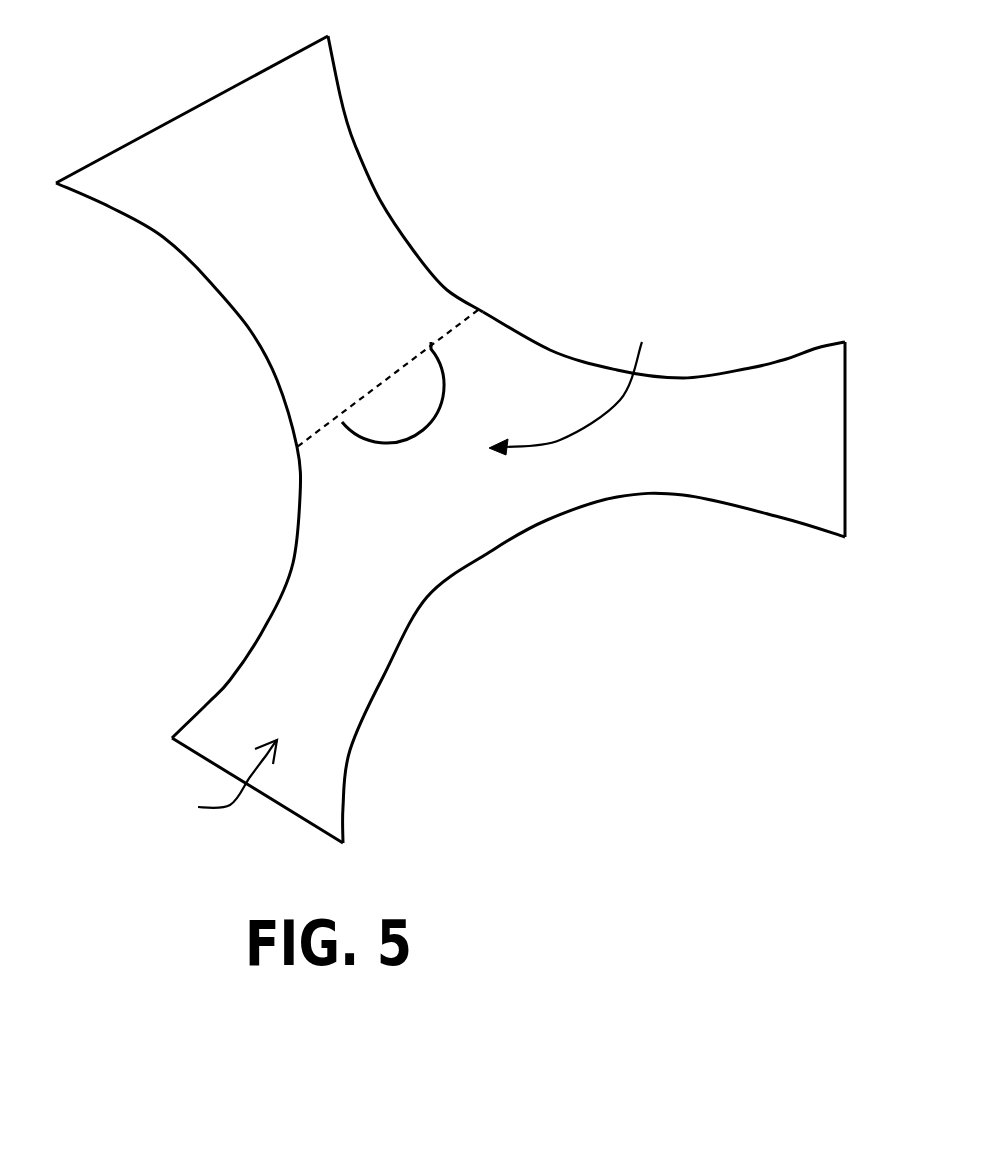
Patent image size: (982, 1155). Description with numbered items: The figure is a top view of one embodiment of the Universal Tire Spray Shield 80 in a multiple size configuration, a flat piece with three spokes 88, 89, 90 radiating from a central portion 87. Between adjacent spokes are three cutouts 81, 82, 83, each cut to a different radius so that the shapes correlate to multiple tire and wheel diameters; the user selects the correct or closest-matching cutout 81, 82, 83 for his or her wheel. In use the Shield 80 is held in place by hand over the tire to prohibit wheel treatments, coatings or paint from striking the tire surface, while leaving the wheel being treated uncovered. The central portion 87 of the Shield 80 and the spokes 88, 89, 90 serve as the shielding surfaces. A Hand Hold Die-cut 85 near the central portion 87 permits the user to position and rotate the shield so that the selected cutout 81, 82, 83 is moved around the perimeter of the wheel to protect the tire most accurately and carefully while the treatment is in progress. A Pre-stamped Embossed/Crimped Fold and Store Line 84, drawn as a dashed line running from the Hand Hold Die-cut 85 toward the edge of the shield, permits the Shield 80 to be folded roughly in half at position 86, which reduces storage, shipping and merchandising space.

The Universal Tire Spray Shield 80 is at (217, 784).
The cutout 81 is at (493, 550).
The cutout 82 is at (355, 145).
The cutout 83 is at (163, 237).
The Pre-stamped Embossed/Crimped Fold and Store Line 84 is at (363, 400).
The Hand Hold Die-cut 85 is at (380, 450).
The fold position 86 is at (478, 310).
The central portion 87 is at (580, 377).
The spoke 88 is at (815, 463).
The spoke 89 is at (236, 160).
The spoke 90 is at (223, 738).